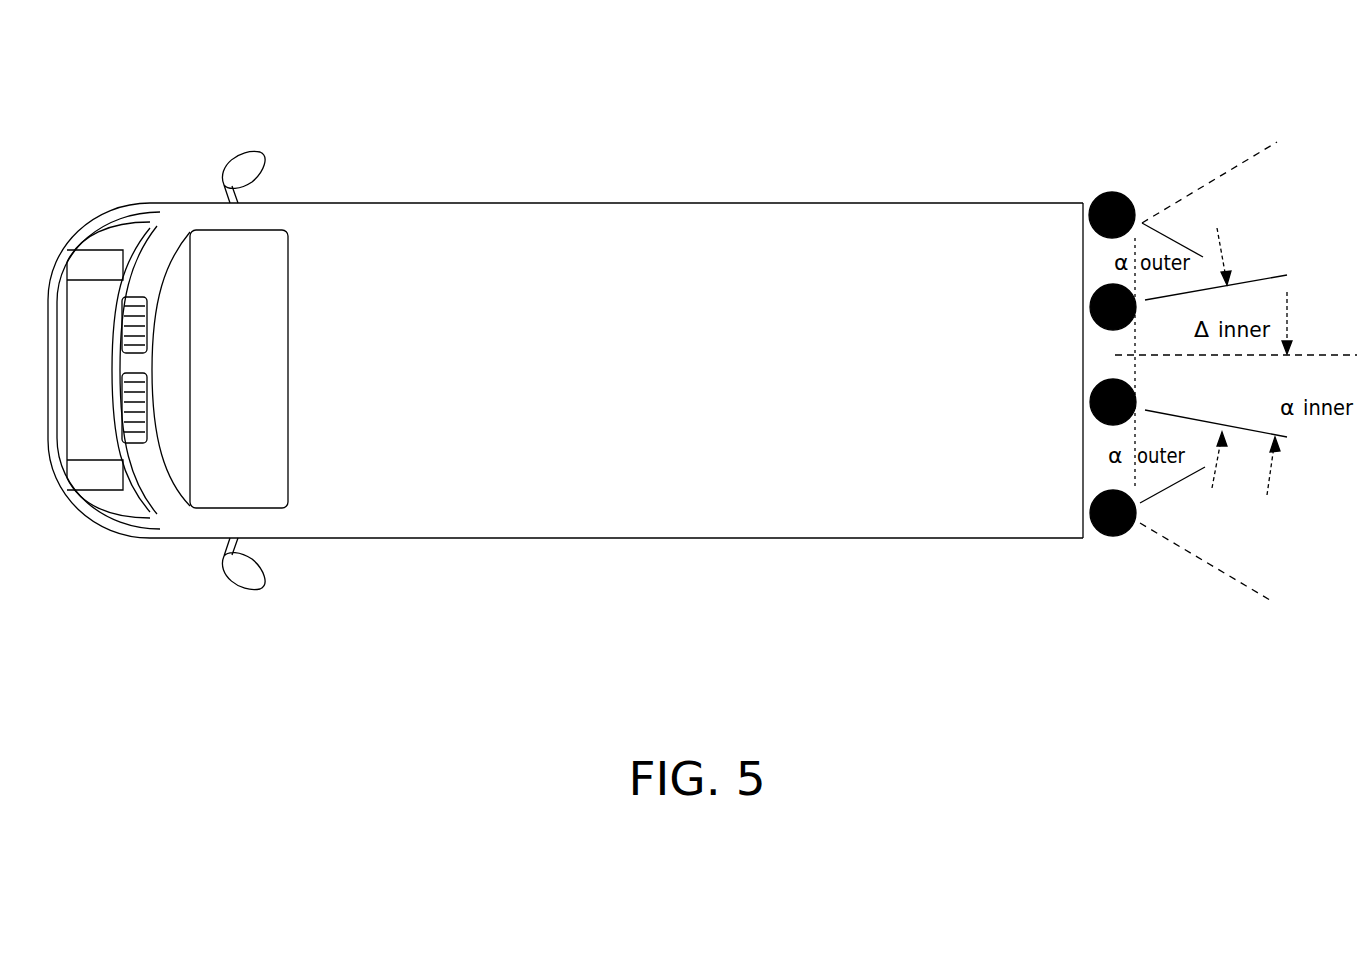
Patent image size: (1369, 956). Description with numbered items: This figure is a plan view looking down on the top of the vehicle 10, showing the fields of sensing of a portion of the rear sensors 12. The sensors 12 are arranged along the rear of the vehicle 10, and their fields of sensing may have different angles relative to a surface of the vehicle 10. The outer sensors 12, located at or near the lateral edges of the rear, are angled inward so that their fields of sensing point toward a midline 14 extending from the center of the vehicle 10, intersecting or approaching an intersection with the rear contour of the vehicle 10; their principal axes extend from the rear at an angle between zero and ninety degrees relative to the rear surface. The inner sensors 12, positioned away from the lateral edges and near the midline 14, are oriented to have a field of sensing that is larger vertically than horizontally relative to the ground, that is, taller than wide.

The vehicle 10 is at (882, 205).
The sensors 12 is at (1108, 193).
The midline 14 is at (1353, 355).